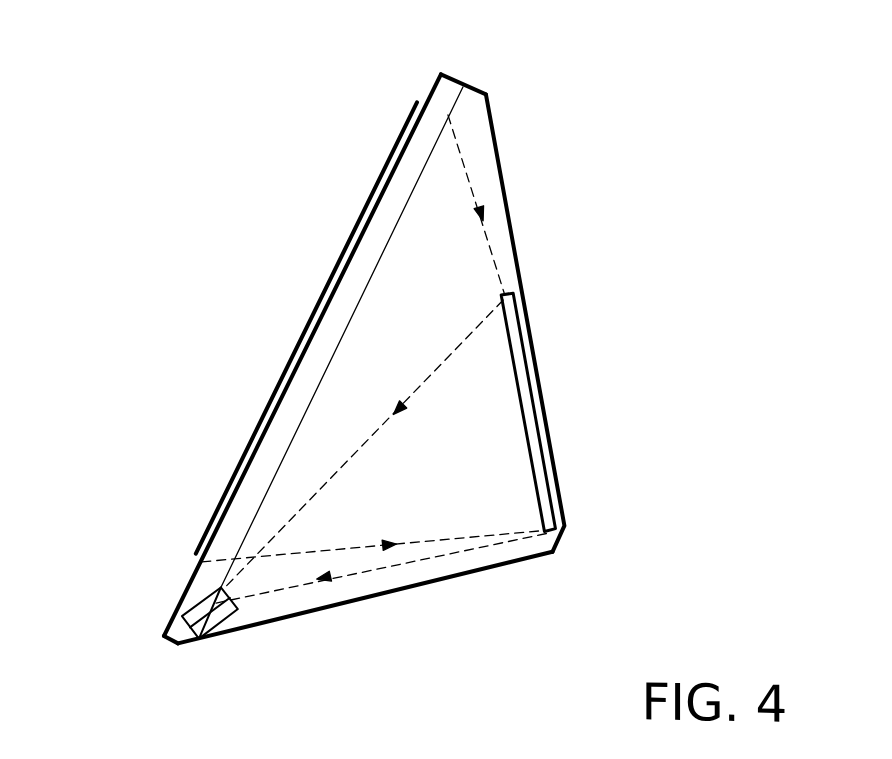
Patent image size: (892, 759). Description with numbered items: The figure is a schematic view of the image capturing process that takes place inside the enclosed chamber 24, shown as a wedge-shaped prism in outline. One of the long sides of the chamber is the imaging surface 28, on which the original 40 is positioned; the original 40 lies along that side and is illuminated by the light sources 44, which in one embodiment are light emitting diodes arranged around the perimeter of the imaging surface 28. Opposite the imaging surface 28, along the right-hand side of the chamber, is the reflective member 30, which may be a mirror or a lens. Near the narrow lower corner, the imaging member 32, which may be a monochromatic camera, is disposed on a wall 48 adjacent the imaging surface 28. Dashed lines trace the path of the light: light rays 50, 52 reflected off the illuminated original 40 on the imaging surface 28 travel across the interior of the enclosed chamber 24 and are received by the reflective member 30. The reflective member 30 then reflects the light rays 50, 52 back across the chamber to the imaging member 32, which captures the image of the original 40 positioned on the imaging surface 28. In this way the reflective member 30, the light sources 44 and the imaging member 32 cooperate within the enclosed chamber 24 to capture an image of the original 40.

The enclosed chamber 24 is at (146, 146).
The imaging surface 28 is at (432, 93).
The reflective member 30 is at (523, 355).
The imaging member 32 is at (228, 640).
The original 40 is at (345, 255).
The light sources 44 is at (219, 590).
The wall 48 is at (197, 648).
The light ray 50 is at (461, 167).
The light ray 52 is at (440, 533).